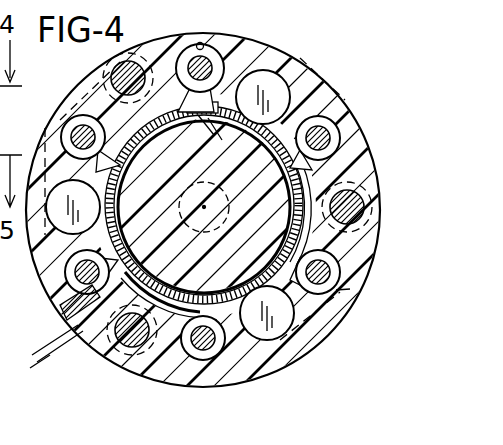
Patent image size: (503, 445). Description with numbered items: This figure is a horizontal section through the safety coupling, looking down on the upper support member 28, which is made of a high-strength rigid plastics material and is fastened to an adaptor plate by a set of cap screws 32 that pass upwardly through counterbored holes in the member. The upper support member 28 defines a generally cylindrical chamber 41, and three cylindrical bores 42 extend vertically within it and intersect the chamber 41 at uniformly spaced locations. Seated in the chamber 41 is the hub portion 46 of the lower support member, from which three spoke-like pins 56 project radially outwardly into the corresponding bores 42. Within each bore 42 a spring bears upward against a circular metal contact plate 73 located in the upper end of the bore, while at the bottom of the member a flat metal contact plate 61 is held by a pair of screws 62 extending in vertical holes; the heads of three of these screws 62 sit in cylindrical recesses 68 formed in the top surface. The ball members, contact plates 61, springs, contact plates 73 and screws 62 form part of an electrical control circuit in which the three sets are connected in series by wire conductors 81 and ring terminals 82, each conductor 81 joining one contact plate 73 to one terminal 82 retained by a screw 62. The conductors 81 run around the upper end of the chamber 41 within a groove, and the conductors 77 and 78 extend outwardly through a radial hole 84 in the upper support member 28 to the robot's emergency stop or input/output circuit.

The upper support member 28 is at (336, 67).
The cap screws 32 is at (130, 348).
The cylindrical cavity or chamber 41 is at (178, 244).
The cylindrical bores 42 is at (272, 380).
The hub portion 46 is at (258, 193).
The spoke-like pins 56 is at (245, 275).
The contact plate 61 is at (336, 325).
The screws 62 is at (349, 253).
The cylindrical recesses 68 is at (350, 290).
The circular metal contact plate 73 is at (300, 340).
The wire conductor 77 is at (58, 354).
The wire conductor 78 is at (52, 338).
The wire conductors 81 is at (293, 214).
The ring terminals 82 is at (196, 368).
The radial hole 84 is at (90, 336).